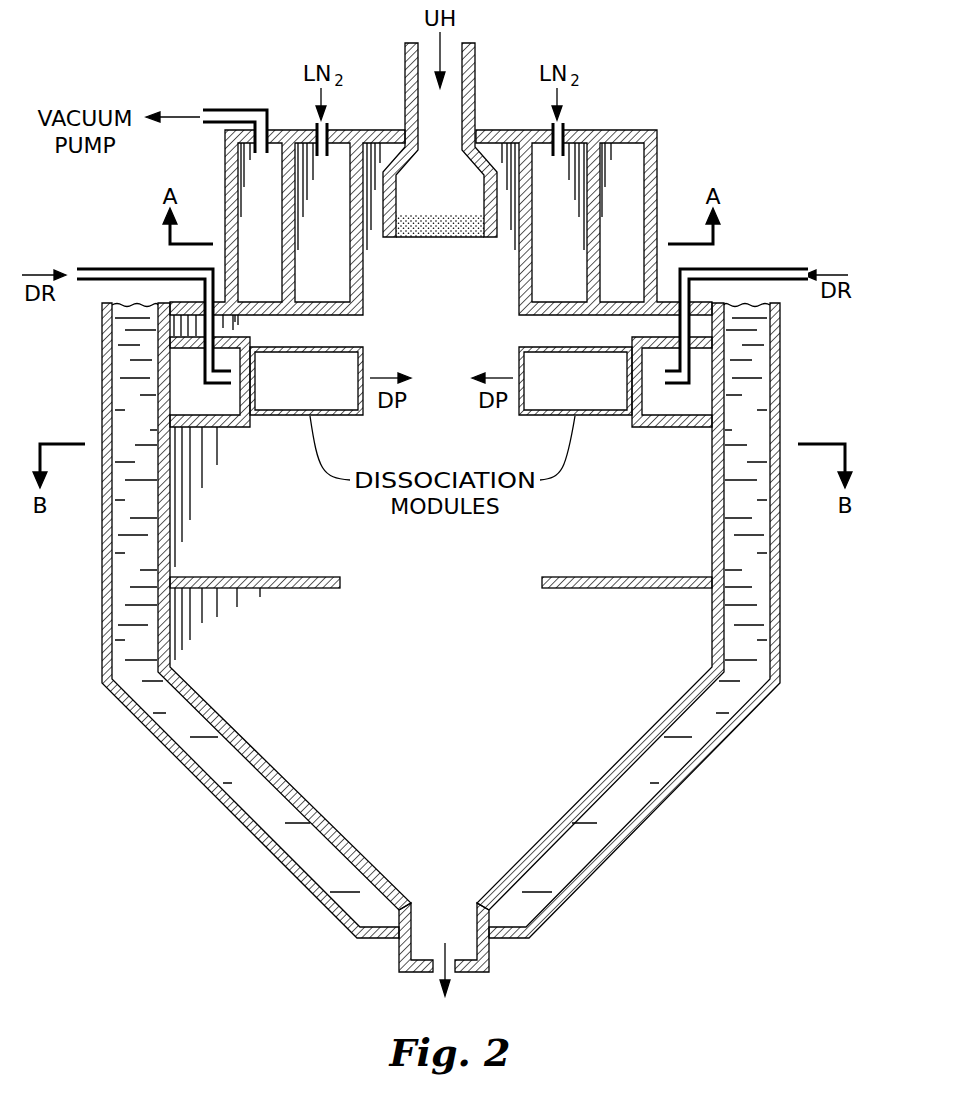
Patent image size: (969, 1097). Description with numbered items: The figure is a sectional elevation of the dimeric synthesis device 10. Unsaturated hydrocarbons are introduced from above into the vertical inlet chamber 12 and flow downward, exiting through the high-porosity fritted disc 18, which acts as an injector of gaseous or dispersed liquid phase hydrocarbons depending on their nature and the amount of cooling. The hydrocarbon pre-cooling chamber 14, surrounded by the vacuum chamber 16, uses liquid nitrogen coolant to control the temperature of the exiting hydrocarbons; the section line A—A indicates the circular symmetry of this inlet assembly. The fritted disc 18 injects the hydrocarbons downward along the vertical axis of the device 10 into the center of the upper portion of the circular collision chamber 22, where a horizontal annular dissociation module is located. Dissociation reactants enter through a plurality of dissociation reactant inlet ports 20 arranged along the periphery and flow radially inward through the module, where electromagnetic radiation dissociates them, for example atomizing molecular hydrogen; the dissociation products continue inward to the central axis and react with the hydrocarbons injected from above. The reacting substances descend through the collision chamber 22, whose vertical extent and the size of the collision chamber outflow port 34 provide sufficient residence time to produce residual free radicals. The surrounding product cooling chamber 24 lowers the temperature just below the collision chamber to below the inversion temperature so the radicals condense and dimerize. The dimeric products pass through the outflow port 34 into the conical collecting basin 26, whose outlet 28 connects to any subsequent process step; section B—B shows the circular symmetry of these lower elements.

The dimeric synthesis device 10 is at (170, 841).
The vertical inlet chamber 12 is at (426, 199).
The hydrocarbon pre-cooling chamber 14 is at (308, 252).
The vacuum chamber 16 is at (244, 252).
The high-porosity fritted disc 18 is at (483, 238).
The dissociation reactant inlet ports 20 is at (203, 357).
The collision chamber 22 is at (256, 509).
The product cooling chamber 24 is at (123, 519).
The conical collecting basin 26 is at (431, 769).
The outlet 28 is at (490, 962).
The collision chamber outflow port 34 is at (340, 583).